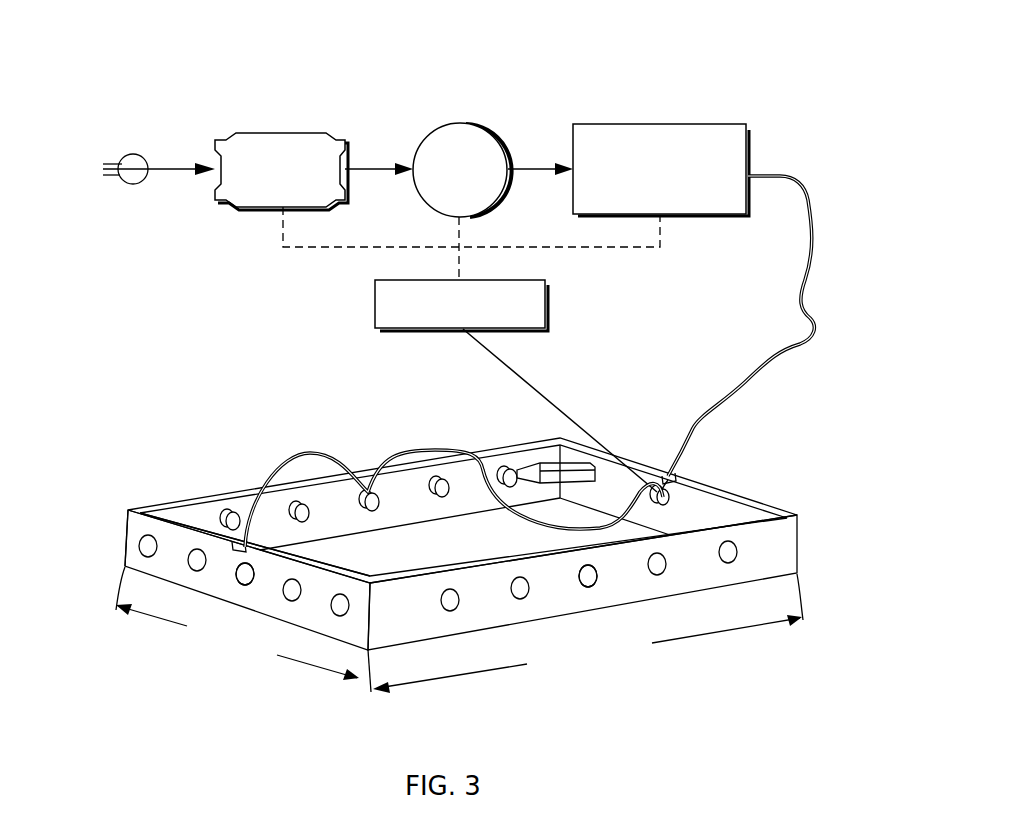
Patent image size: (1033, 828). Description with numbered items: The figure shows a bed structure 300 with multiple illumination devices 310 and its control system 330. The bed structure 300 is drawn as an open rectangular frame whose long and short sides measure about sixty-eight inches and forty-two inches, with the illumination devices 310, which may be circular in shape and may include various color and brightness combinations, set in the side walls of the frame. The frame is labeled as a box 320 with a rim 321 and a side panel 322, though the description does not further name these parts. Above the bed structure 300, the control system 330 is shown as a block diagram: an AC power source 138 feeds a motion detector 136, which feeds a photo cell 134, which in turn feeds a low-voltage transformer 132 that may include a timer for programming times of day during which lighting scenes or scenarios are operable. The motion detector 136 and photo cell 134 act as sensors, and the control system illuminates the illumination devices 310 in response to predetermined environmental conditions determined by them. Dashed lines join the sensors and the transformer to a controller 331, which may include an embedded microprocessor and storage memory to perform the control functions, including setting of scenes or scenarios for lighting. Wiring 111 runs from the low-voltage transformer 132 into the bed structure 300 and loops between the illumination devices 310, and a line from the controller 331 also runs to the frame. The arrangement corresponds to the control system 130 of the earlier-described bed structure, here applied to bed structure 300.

The control system 130 is at (732, 40).
The control system 330 is at (190, 97).
The AC power source 138 is at (135, 153).
The motion detector 136 is at (281, 133).
The photo cell 134 is at (461, 123).
The low-voltage transformer 132 is at (661, 124).
The controller 331 is at (548, 303).
The bed structure 300 is at (192, 432).
The box 320 is at (775, 547).
The rim 321 is at (213, 495).
The side panel 322 is at (128, 545).
The illumination devices 310 is at (236, 574).
The wiring 111 is at (806, 304).